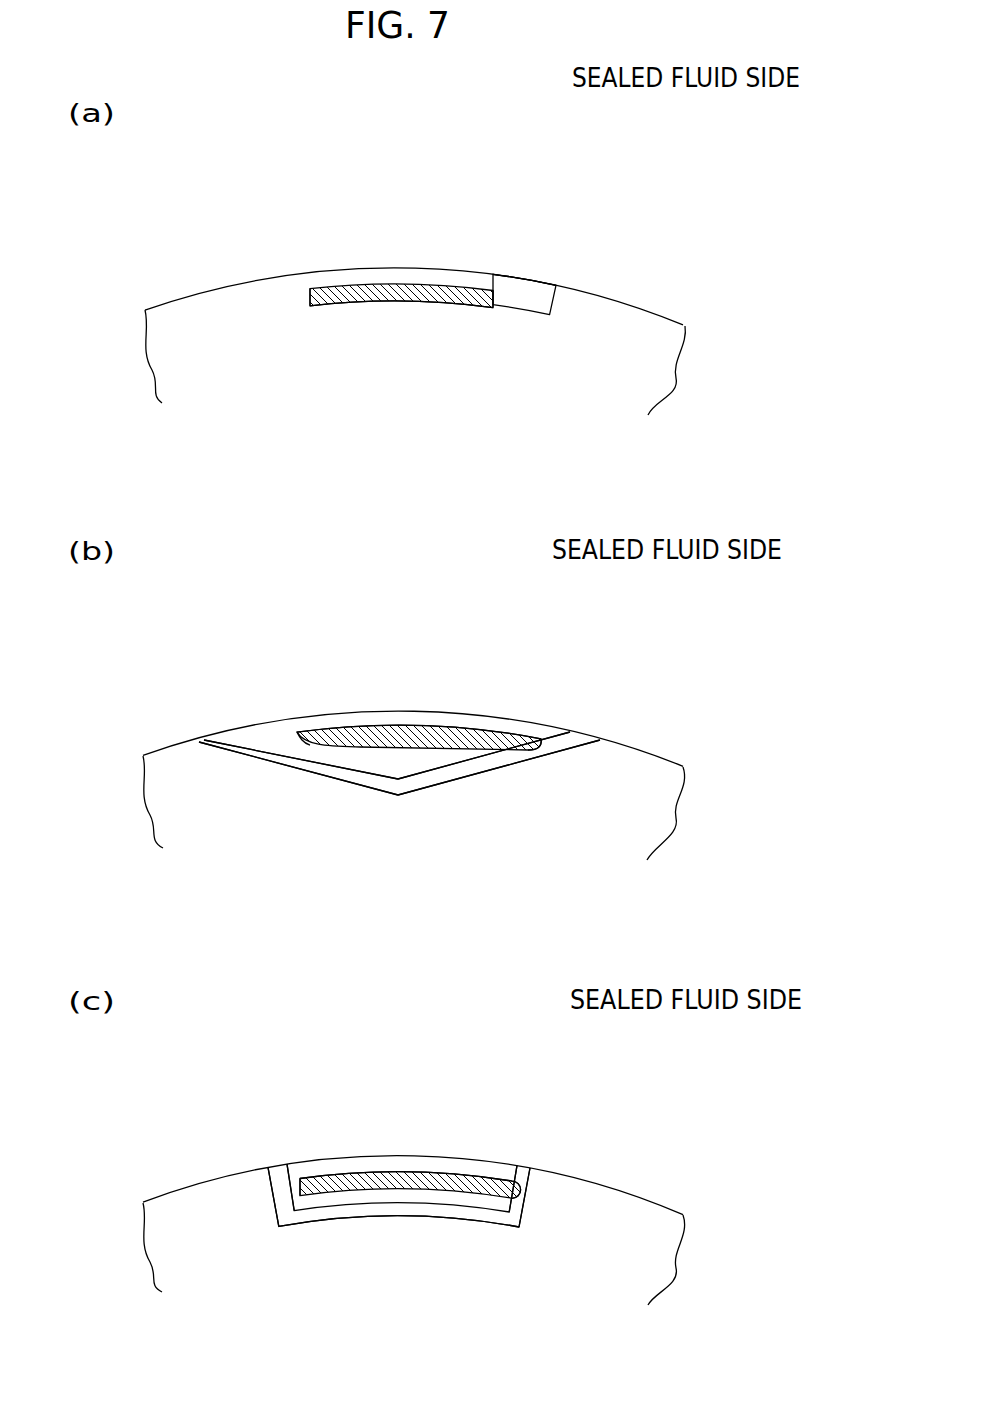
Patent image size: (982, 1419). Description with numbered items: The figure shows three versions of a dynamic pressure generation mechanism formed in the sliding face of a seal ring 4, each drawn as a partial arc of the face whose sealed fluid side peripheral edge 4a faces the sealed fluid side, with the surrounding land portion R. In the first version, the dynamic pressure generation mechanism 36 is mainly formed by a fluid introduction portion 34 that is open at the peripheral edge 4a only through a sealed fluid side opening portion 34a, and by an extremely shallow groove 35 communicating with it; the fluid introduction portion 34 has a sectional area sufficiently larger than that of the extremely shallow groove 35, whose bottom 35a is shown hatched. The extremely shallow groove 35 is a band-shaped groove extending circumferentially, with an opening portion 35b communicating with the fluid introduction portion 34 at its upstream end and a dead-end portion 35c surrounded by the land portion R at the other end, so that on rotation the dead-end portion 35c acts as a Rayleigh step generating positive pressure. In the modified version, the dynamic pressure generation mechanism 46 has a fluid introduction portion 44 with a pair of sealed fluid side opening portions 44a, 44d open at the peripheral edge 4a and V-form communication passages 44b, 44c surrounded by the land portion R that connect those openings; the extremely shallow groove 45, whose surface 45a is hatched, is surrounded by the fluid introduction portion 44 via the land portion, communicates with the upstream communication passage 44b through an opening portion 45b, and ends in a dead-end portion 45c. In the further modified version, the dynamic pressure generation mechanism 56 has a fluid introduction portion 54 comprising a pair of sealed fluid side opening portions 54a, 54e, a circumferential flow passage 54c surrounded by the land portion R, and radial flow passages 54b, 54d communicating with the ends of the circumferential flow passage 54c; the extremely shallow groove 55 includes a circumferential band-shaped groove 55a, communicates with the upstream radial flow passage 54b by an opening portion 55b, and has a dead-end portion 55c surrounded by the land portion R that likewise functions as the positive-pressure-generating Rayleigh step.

The stationary-side seal ring 4 is at (688, 236).
The sealed fluid side peripheral edge 4a is at (610, 299).
The land portion R is at (257, 310).
The dynamic pressure generation mechanism 36 is at (433, 209).
The extremely shallow groove 35 is at (395, 286).
The bottom surface of deep groove portion 35a is at (411, 307).
The opening portion 35b is at (498, 309).
The dead-end portion 35c is at (320, 288).
The fluid introduction portion 34 is at (527, 274).
The sealed fluid side opening portion 34a is at (540, 282).
The fluid introduction portion 44 is at (388, 792).
The sealed fluid side opening portion 44a is at (588, 734).
The communication passage 44b is at (473, 768).
The communication passage 44c is at (325, 768).
The sealed fluid side opening portion 44d is at (213, 735).
The extremely shallow groove 45 is at (414, 727).
The upper surface of filling member 45a is at (350, 730).
The opening portion 45b is at (535, 740).
The dead-end portion 45c is at (320, 727).
The dynamic pressure generation mechanism 46 is at (419, 682).
The fluid introduction portion 54 is at (428, 1222).
The sealed fluid side opening portion 54a is at (529, 1168).
The radial flow passage 54b is at (523, 1197).
The circumferential flow passage 54c is at (391, 1214).
The radial flow passage 54d is at (278, 1196).
The sealed fluid side opening portion 54e is at (270, 1168).
The extremely shallow groove 55 is at (388, 1178).
The band-shaped groove 55a is at (436, 1170).
The opening portion 55b is at (521, 1168).
The dead-end portion 55c is at (304, 1178).
The dynamic pressure generation mechanism 56 is at (410, 1108).